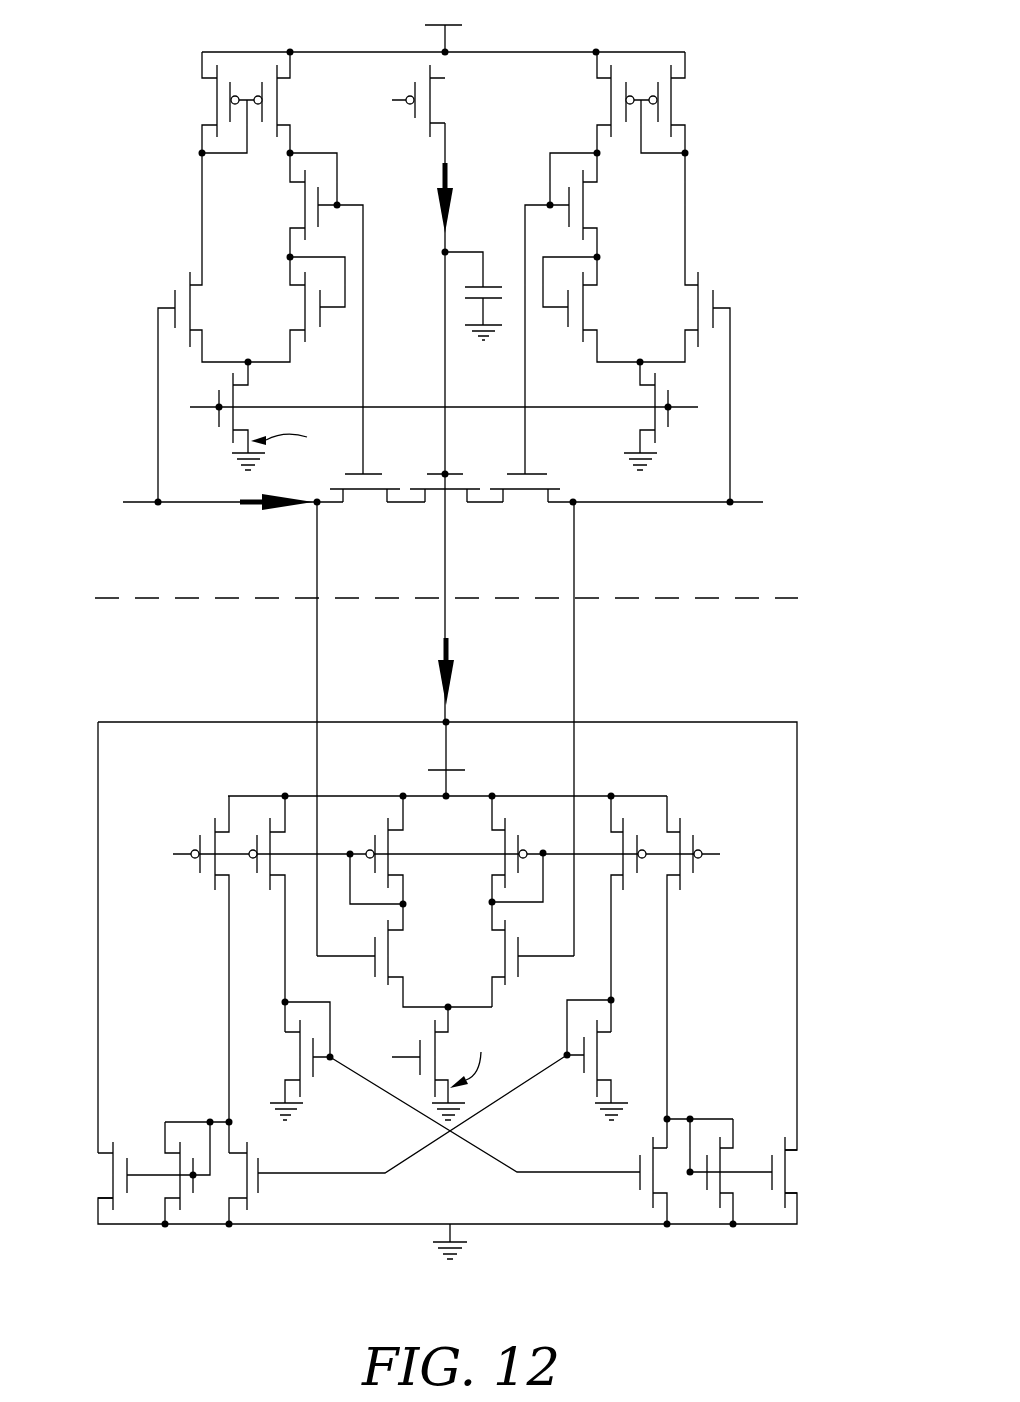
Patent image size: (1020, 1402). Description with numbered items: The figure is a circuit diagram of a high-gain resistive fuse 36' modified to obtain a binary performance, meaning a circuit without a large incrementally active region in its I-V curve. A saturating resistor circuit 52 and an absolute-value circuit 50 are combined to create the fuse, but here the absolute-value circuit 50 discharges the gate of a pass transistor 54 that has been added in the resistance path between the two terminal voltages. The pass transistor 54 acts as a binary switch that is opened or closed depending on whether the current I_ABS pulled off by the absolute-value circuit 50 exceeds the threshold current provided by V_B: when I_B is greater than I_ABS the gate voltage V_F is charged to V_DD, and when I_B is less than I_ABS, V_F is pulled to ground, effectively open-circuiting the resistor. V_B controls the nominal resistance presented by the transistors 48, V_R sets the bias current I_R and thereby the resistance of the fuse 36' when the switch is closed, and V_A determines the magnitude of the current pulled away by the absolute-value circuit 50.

The transistors 48 is at (390, 461).
The pass transistor 54 is at (468, 459).
The saturating resistor circuit 52 is at (727, 239).
The resistive fuse 36' is at (484, 478).
The absolute-value circuit 50 is at (786, 690).